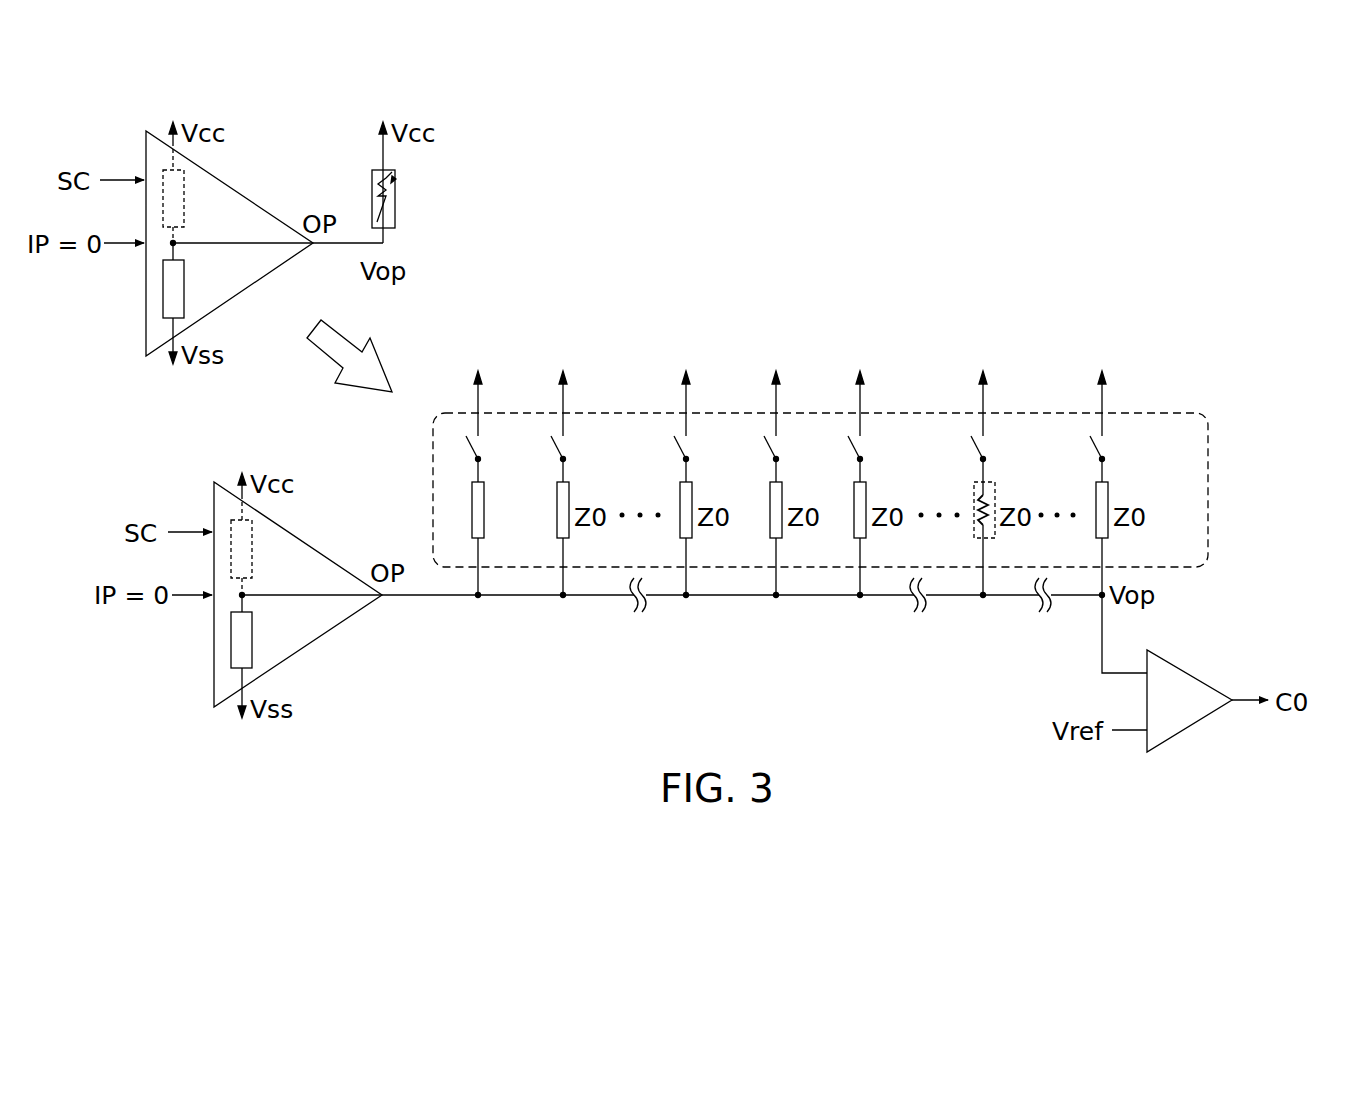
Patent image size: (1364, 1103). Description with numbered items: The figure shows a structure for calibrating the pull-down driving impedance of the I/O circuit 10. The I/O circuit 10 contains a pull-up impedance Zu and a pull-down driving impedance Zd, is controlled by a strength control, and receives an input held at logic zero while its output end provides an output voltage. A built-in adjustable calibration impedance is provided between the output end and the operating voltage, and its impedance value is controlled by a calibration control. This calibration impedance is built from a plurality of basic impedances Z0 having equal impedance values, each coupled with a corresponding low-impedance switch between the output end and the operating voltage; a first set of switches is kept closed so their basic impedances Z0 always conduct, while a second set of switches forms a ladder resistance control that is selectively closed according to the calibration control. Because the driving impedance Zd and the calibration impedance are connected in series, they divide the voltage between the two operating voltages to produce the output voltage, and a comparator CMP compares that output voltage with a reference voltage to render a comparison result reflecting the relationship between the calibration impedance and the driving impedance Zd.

The I/O circuit 10 is at (146, 326).
The pull-up impedance Zu is at (227, 374).
The driving impedance Zd is at (227, 464).
The basic impedance Z0 is at (497, 540).
The comparator CMP is at (1189, 701).